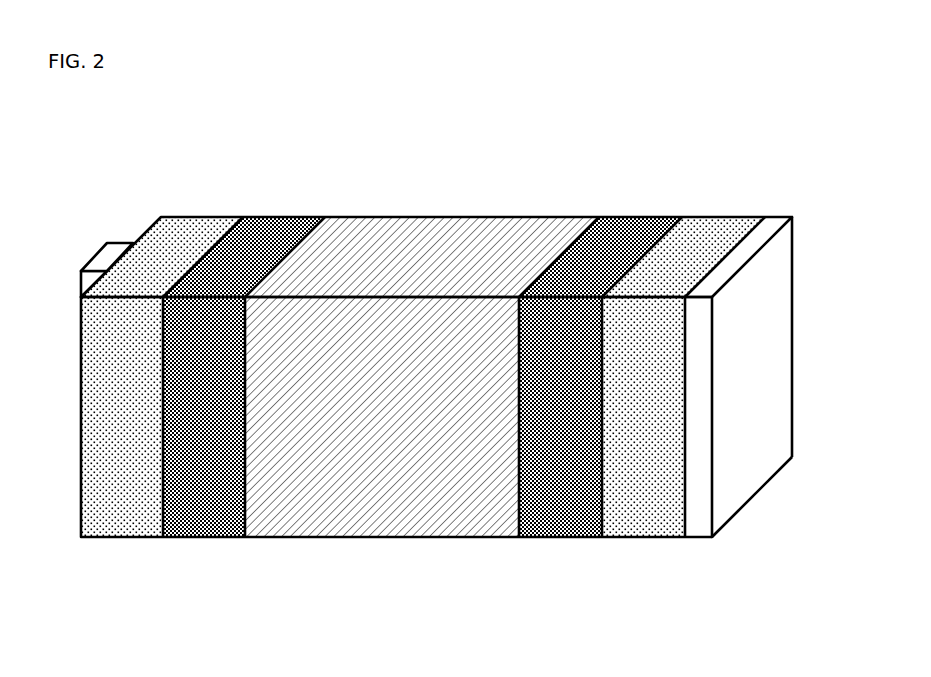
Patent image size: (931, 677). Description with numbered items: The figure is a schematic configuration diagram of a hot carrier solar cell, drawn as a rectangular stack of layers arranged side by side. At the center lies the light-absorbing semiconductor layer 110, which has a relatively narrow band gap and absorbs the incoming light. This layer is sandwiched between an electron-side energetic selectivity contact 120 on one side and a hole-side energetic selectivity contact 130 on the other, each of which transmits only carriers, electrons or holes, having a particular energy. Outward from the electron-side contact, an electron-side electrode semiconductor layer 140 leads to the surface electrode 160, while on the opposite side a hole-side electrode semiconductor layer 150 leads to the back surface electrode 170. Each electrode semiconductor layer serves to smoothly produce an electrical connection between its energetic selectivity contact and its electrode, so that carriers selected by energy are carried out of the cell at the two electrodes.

The light-absorbing semiconductor layer 110 is at (453, 216).
The electron-side energetic selectivity contact 120 is at (278, 217).
The hole-side energetic selectivity contact 130 is at (632, 216).
The electron-side electrode semiconductor layer 140 is at (200, 217).
The hole-side electrode semiconductor layer 150 is at (720, 216).
The surface electrode 160 is at (126, 244).
The back surface electrode 170 is at (772, 216).